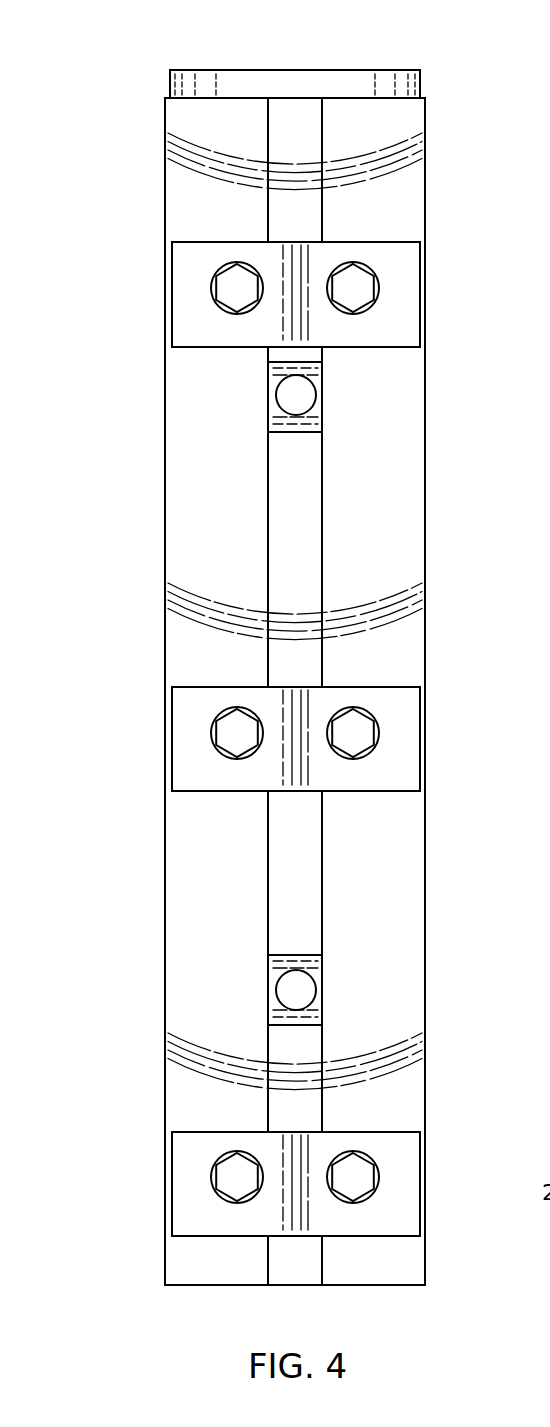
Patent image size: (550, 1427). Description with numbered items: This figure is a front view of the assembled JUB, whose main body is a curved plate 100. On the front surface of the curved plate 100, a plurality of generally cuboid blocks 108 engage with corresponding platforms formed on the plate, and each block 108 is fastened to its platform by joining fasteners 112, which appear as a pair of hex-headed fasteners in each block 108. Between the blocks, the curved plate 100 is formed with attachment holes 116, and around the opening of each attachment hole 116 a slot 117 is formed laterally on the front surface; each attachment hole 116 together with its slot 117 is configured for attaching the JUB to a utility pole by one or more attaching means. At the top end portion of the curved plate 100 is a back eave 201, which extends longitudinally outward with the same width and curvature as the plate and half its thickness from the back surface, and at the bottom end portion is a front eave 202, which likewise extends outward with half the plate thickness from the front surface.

The curved plate 100 is at (195, 198).
The back eave 201 is at (325, 83).
The front eave 202 is at (385, 1272).
The block 108 is at (195, 303).
The joining fastener 112 is at (363, 730).
The attachment hole 116 is at (275, 993).
The slot 117 is at (312, 1017).